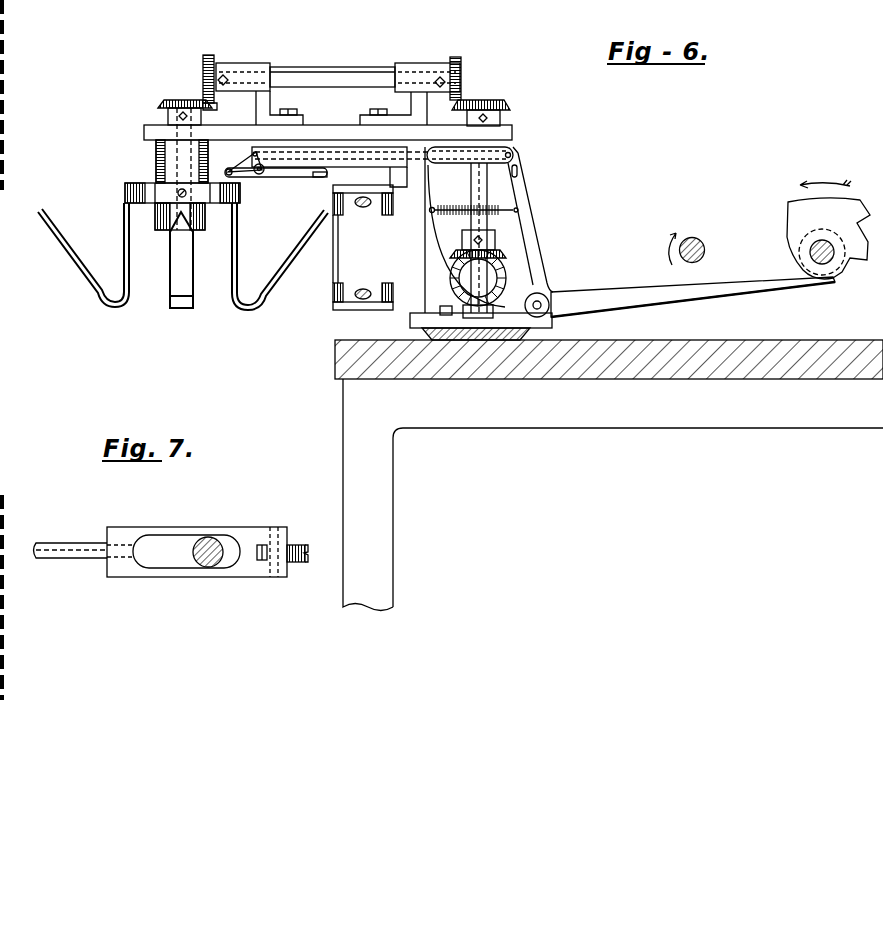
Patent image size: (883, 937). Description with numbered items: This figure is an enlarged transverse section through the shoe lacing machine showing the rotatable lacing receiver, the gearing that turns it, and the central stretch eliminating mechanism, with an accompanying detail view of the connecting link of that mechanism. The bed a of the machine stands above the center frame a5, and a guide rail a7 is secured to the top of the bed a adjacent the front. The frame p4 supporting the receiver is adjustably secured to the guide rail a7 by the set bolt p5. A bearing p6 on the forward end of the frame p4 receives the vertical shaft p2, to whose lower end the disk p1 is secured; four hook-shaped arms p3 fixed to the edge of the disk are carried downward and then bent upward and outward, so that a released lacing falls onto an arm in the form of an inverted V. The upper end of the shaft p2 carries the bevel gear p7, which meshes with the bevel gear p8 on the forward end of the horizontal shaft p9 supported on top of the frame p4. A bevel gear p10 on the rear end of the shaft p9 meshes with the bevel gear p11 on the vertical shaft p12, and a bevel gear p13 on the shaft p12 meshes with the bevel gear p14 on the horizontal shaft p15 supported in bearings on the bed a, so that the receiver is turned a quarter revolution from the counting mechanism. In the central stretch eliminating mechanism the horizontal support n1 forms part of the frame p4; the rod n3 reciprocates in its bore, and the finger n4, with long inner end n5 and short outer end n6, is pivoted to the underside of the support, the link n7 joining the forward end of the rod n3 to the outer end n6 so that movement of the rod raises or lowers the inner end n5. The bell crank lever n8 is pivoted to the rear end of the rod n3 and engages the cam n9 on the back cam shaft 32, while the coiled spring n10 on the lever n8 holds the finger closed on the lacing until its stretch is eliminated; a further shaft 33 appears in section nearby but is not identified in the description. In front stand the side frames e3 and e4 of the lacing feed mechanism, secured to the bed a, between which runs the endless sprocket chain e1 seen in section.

In FIG. 6, the bevel gear p8 is at (207, 55).
In FIG. 6, the horizontal shaft p9 is at (335, 67).
In FIG. 6, the bevel gear p10 is at (458, 60).
In FIG. 6, the bevel gear p11 is at (492, 100).
In FIG. 6, the bevel gear p7 is at (165, 100).
In FIG. 6, the frame p4 is at (143, 130).
In FIG. 6, the bearing p6 is at (160, 154).
In FIG. 6, the vertical shaft p2 is at (178, 173).
In FIG. 6, the disk p1 is at (125, 193).
In FIG. 6, the arms p3 is at (125, 252).
In FIG. 6, the horizontal support n1 is at (337, 155).
In FIG. 6, the link n7 is at (243, 167).
In FIG. 6, the finger n4 is at (286, 178).
In FIG. 6, the short outer end of finger n6 is at (236, 176).
In FIG. 6, the long inner end of finger n5 is at (318, 178).
In FIG. 6, the side frame e4 is at (399, 274).
In FIG. 6, the side frame e3 is at (333, 294).
In FIG. 6, the endless sprocket chain e1 is at (358, 312).
In FIG. 6, the rod n3 is at (515, 152).
In FIG. 7, the rod n3 is at (80, 541).
In FIG. 6, the vertical shaft p12 is at (490, 194).
In FIG. 7, the vertical shaft p12 is at (192, 554).
In FIG. 6, the coiled spring n10 is at (455, 206).
In FIG. 6, the bevel gear p13 is at (492, 251).
In FIG. 6, the bevel gear p14 is at (507, 272).
In FIG. 6, the horizontal shaft p15 is at (505, 291).
In FIG. 6, the set bolt p5 is at (437, 313).
In FIG. 6, the guide rail a7 is at (485, 341).
In FIG. 6, the bed a is at (773, 350).
In FIG. 6, the center frame a5 is at (695, 418).
In FIG. 6, the bell crank lever n8 is at (628, 293).
In FIG. 7, the bell crank lever n8 is at (298, 545).
In FIG. 6, the cam n9 is at (792, 210).
In FIG. 6, the back cam shaft 32 is at (830, 259).
In FIG. 6, the pin 33 is at (698, 243).